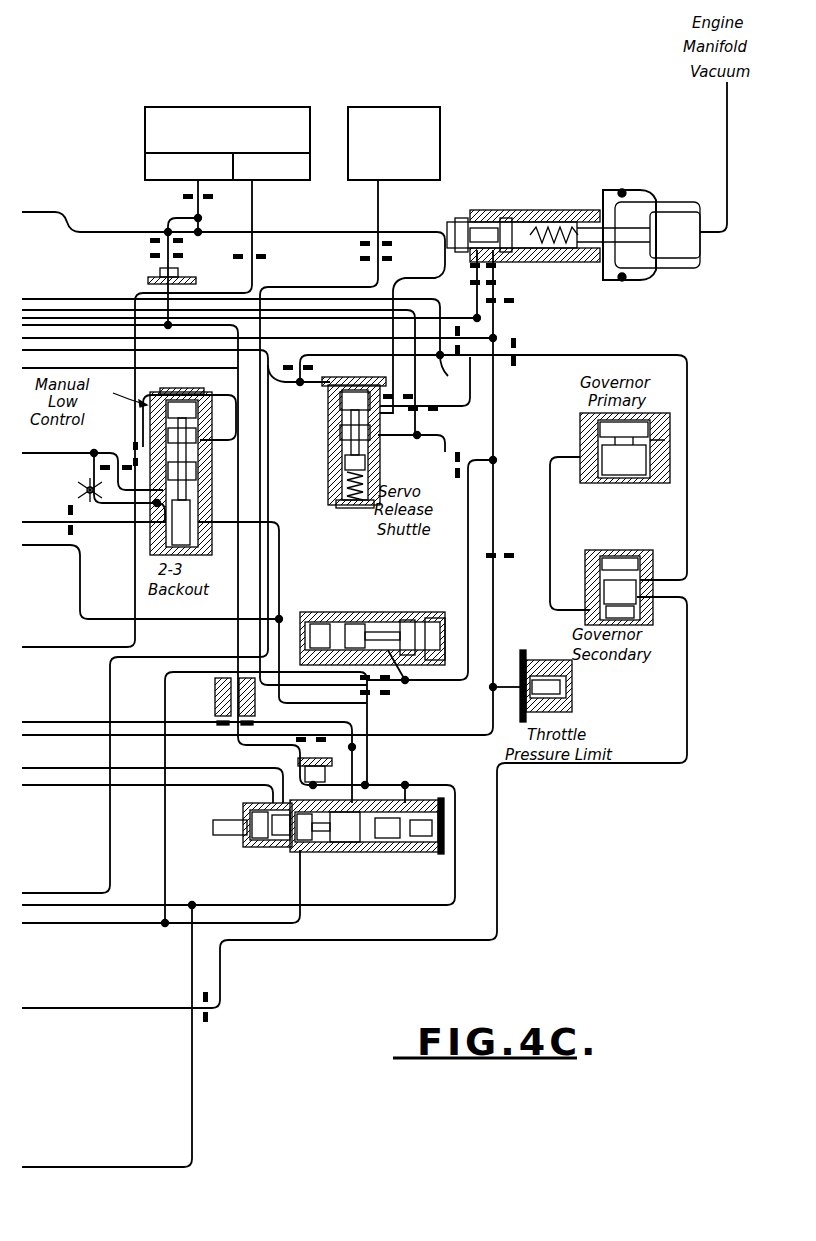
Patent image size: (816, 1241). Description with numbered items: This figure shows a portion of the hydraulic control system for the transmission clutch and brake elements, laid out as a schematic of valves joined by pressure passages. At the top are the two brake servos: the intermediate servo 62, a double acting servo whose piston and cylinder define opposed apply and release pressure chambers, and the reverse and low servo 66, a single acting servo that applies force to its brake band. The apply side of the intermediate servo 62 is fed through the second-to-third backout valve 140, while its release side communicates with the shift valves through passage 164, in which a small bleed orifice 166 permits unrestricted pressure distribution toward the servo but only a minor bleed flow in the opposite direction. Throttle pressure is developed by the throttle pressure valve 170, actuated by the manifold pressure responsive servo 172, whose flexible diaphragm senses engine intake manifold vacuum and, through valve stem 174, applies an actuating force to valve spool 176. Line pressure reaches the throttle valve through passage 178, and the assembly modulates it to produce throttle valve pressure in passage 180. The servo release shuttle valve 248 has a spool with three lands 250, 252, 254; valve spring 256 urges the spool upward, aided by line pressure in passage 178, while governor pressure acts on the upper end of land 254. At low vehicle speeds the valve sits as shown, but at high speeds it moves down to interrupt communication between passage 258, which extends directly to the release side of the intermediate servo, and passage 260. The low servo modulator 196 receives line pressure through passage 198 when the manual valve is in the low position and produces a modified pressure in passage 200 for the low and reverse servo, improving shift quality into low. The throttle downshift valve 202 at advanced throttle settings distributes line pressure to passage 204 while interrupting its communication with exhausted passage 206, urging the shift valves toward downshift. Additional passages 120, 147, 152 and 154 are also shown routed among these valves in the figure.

The servo 62 is at (245, 95).
The servo 66 is at (390, 107).
The line pressure passage 120 is at (90, 1165).
The 2-3 backout valve 140 is at (200, 490).
The governor feed passage 147 is at (610, 355).
The throttle pressure booster valve 152 is at (407, 683).
The passage 154 is at (82, 598).
The passage 164 is at (85, 325).
The bleed orifice 166 is at (158, 280).
The throttle pressure valve 170 is at (523, 215).
The manifold pressure responsive servo 172 is at (658, 192).
The valve stem 174 is at (563, 225).
The valve spool 176 is at (475, 222).
The passage 178 is at (480, 378).
The passage 180 is at (497, 320).
The low servo modulator 196 is at (375, 803).
The passage 198 is at (78, 718).
The passage 200 is at (270, 497).
The throttle downshift valve 202 is at (240, 814).
The passage 204 is at (78, 752).
The passage 206 is at (50, 790).
The servo release shuttle valve 248 is at (340, 428).
The land 250 is at (365, 455).
The land 252 is at (338, 402).
The land 254 is at (351, 429).
The valve spring 256 is at (340, 505).
The passage 258 is at (312, 231).
The passage 260 is at (344, 450).